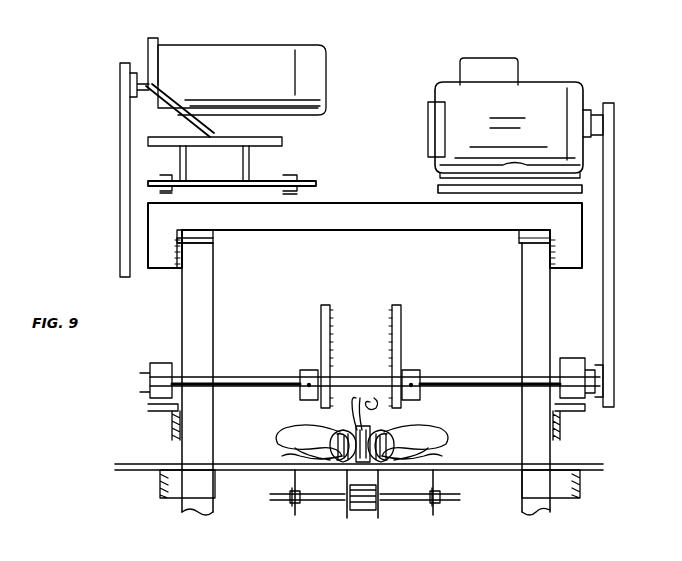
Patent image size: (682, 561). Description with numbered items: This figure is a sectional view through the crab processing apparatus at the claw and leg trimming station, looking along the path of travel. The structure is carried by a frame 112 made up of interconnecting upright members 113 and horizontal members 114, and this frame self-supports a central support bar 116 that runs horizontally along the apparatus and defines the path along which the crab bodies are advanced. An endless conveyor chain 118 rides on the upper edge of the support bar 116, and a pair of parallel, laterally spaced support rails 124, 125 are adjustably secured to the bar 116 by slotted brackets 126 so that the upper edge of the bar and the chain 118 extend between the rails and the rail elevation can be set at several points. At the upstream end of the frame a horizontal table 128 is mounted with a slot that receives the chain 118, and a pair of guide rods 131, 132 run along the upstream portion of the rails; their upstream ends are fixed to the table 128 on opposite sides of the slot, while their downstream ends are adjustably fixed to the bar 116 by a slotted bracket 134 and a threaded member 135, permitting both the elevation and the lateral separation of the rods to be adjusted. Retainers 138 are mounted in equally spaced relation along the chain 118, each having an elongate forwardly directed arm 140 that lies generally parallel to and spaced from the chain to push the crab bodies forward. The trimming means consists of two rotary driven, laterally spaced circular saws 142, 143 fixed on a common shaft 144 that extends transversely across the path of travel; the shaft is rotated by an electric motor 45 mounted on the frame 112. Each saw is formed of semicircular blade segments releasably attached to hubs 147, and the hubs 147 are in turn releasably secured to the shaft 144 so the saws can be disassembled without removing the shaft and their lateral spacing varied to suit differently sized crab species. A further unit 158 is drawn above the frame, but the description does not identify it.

The motor 45 is at (521, 232).
The frame 112 is at (170, 449).
The upright members 113 is at (203, 280).
The horizontal members 114 is at (190, 240).
The central support bar 116 is at (330, 483).
The conveyor chain 118 is at (366, 477).
The support rail 124 is at (318, 424).
The support rail 125 is at (398, 428).
The slotted brackets 126 is at (345, 512).
The horizontal table 128 is at (128, 470).
The guide rod 131 is at (280, 456).
The guide rod 132 is at (443, 450).
The slotted bracket 134 is at (290, 486).
The threaded member 135 is at (288, 497).
The retainers 138 is at (362, 375).
The forwardly directed arm 140 is at (371, 376).
The circular saw 142 is at (322, 310).
The circular saw 143 is at (399, 315).
The shaft 144 is at (484, 378).
The hubs 147 is at (315, 369).
The drive unit 158 is at (264, 80).